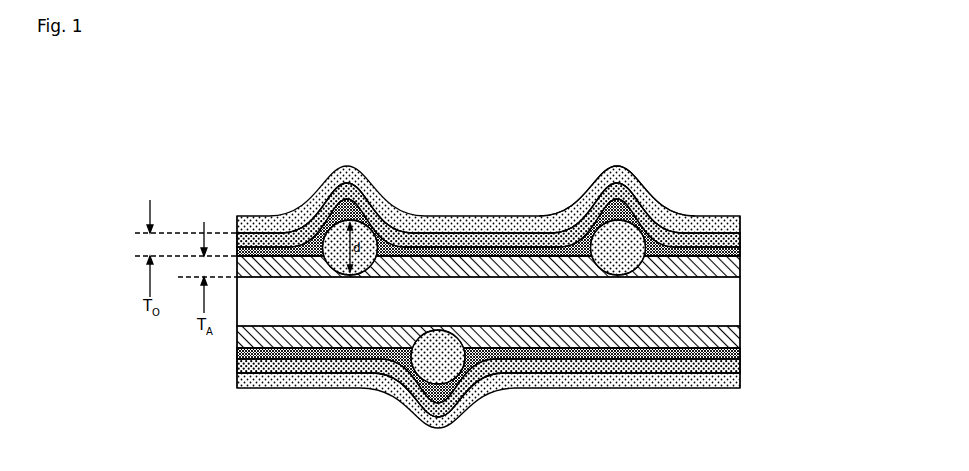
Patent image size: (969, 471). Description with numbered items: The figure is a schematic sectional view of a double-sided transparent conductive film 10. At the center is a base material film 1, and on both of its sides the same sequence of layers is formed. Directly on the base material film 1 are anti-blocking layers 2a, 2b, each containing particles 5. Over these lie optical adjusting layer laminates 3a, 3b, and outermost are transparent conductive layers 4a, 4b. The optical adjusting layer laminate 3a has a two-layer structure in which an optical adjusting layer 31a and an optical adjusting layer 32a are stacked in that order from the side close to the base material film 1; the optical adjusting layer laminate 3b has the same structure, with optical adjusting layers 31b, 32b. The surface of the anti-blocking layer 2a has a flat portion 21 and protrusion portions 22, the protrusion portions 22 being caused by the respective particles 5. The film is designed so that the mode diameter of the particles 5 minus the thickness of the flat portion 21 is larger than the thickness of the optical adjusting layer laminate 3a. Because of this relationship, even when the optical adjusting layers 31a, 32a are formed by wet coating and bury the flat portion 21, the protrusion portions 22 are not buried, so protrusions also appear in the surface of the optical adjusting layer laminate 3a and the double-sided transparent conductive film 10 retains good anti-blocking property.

The double-sided transparent conductive film 10 is at (218, 143).
The base material film 1 is at (725, 299).
The anti-blocking layer 2a is at (740, 265).
The anti-blocking layer 2b is at (740, 335).
The optical adjusting layer laminate 3a is at (821, 212).
The optical adjusting layer laminate 3b is at (821, 350).
The optical adjusting layer 31a is at (740, 251).
The optical adjusting layer 32a is at (740, 240).
The optical adjusting layer 31b is at (740, 352).
The optical adjusting layer 32b is at (740, 368).
The transparent conductive layer 4a is at (740, 216).
The transparent conductive layer 4b is at (740, 384).
The particles 5 is at (314, 211).
The flat portion 21 is at (444, 248).
The protrusion portion 22 is at (593, 212).